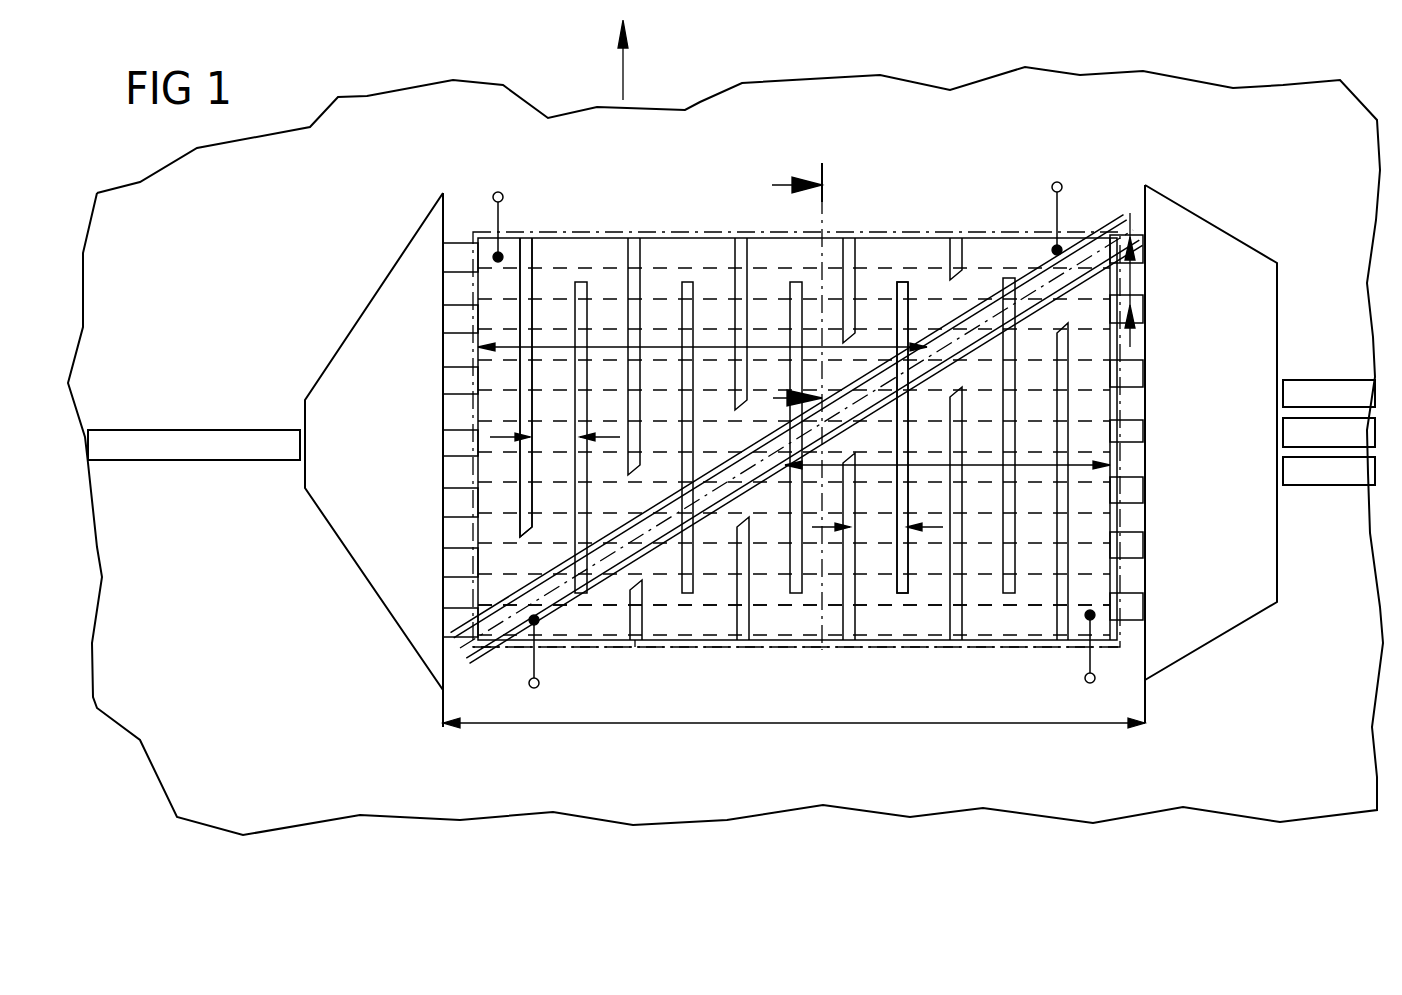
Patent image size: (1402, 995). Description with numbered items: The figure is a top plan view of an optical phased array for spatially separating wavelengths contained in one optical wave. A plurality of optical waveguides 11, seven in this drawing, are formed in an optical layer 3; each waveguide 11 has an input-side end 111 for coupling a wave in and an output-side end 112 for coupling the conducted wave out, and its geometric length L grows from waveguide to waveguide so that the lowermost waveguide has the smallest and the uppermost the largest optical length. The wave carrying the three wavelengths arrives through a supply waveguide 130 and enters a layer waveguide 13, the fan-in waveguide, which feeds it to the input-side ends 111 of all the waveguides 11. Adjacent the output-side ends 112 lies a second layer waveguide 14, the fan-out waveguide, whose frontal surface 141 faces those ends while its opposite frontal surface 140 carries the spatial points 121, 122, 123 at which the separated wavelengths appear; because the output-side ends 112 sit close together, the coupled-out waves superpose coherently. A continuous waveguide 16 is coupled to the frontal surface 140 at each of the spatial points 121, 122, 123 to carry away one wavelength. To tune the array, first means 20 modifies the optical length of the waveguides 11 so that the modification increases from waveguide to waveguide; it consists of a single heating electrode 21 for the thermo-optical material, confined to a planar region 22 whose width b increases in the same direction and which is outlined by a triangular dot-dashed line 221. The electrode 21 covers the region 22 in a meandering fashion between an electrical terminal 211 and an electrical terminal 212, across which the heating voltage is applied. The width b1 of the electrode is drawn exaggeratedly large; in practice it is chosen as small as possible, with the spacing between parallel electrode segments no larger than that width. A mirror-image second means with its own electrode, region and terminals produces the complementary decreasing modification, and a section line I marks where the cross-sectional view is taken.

The optical layer 3 is at (180, 770).
The supply waveguide 130 is at (153, 462).
The layer waveguide (fan-in waveguide) 13 is at (345, 510).
The layer waveguide (fan-out waveguide) 14 is at (1200, 630).
The second frontal surface 140 is at (1283, 563).
The frontal surface 141 is at (1143, 185).
The continuous waveguide 16 is at (1345, 455).
The spatial point 121 is at (1283, 393).
The spatial point 122 is at (1283, 432).
The spatial point 123 is at (1283, 472).
The optical waveguide 11 is at (850, 313).
The input-side end 111 is at (443, 318).
The output-side end 112 is at (1143, 250).
The first means 20 is at (605, 262).
The electrode 21 is at (660, 252).
The region 22 is at (527, 263).
The dot-dashed line 221 is at (703, 232).
The electrical terminal 211 is at (493, 195).
The electrical terminal 212 is at (1053, 188).
The geometric length L is at (780, 723).
The width b is at (712, 345).
The width b1 is at (716, 484).
The section line I is at (789, 406).